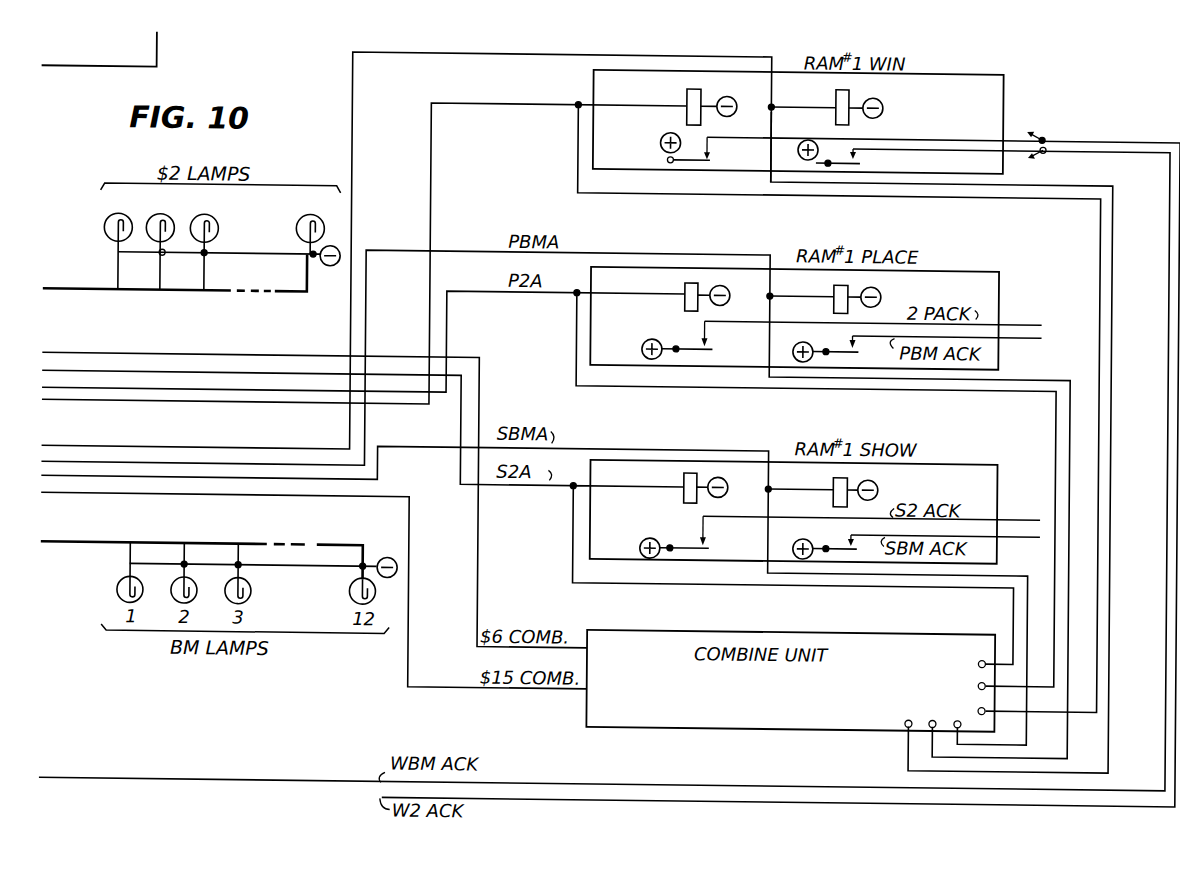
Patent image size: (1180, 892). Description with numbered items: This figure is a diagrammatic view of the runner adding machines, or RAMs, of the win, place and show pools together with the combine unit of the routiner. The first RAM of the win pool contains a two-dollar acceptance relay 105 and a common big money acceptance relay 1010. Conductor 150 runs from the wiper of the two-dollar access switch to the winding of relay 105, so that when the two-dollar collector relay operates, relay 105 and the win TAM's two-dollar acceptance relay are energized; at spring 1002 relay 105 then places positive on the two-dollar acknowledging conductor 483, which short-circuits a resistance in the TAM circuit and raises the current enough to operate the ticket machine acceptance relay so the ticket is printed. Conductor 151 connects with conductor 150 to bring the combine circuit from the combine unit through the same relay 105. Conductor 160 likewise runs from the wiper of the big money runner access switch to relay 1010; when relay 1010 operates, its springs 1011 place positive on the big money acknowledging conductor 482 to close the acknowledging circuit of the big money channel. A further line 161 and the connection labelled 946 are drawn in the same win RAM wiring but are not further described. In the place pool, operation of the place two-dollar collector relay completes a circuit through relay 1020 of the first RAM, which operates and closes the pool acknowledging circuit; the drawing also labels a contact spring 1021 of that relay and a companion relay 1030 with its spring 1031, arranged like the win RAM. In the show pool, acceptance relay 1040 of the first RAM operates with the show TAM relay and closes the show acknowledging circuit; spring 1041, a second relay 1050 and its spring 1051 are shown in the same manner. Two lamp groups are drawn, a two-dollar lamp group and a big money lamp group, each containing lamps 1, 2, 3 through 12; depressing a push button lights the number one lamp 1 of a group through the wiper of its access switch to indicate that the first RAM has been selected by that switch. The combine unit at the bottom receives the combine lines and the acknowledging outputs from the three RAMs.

The lamp circuit connection 946 is at (154, 58).
The conductor 160 is at (467, 57).
The conductor 150 is at (461, 104).
The conductor 151 is at (576, 145).
The $2.00 acceptance relay 105 is at (686, 90).
The spring 1002 is at (709, 159).
The big money acceptance relay 1010 is at (835, 90).
The branch line 161 is at (771, 124).
The springs 1011 is at (859, 160).
The $2.00 acknowledging conductor 483 is at (1046, 133).
The big money acknowledging conductor 482 is at (1049, 148).
The relay 1020 is at (684, 288).
The relay contact 1021 is at (679, 333).
The relay coil 1030 is at (833, 285).
The relay contact 1031 is at (828, 335).
The acceptance relay 1040 is at (684, 480).
The relay contact 1041 is at (680, 525).
The relay coil 1050 is at (834, 479).
The relay contact 1051 is at (828, 543).
The lamp 1 is at (118, 242).
The lamp 2 is at (160, 243).
The lamp 3 is at (204, 243).
The lamp 12 is at (310, 225).